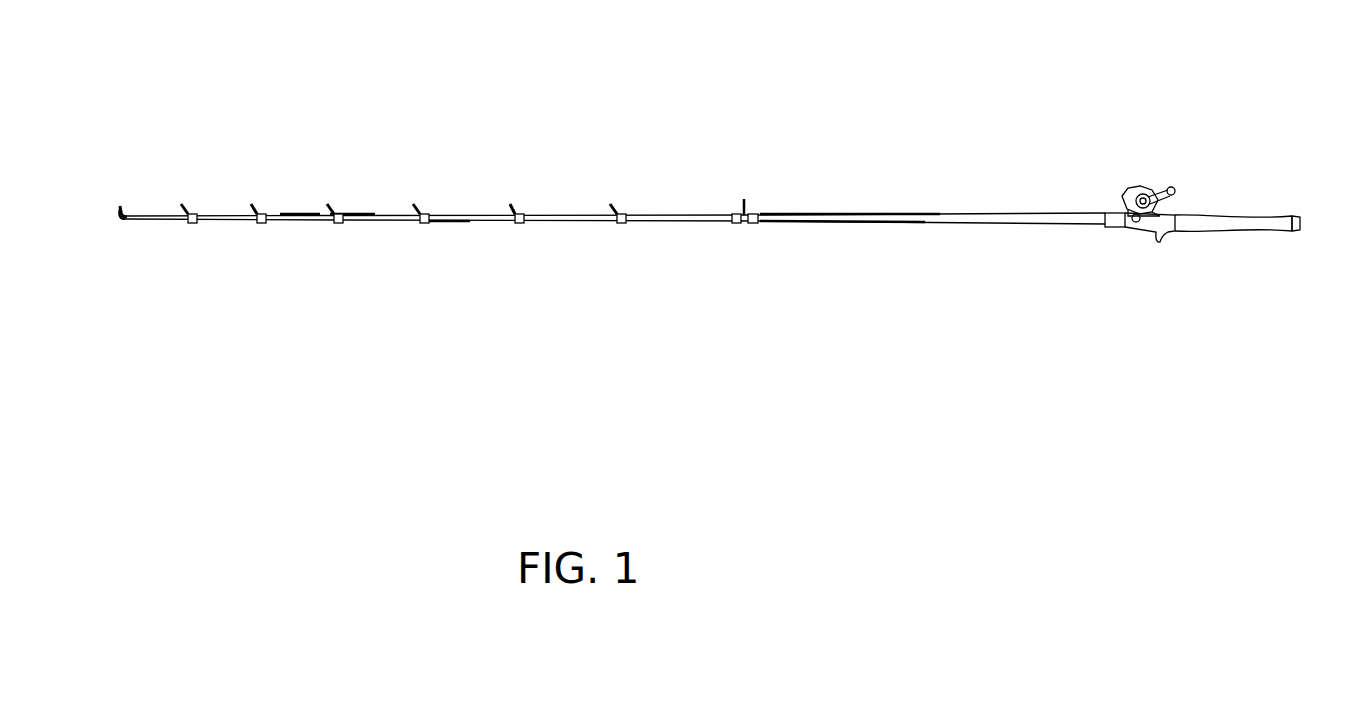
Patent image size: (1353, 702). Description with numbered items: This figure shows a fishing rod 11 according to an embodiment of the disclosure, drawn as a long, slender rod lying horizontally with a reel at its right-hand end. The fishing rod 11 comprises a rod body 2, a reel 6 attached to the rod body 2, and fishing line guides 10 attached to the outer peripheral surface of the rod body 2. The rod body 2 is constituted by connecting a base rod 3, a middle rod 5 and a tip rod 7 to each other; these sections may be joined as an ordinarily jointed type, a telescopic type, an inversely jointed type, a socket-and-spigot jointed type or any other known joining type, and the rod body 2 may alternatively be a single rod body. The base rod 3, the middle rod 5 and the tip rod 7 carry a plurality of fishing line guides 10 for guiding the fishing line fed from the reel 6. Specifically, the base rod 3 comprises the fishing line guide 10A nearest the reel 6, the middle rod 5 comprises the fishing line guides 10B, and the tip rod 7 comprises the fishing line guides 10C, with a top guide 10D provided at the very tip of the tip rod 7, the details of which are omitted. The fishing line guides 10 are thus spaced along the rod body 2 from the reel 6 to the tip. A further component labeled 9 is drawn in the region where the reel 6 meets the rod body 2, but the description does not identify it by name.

The fishing rod 11 is at (1052, 92).
The rod body 2 is at (987, 299).
The tip rod 7 is at (374, 222).
The middle rod 5 is at (563, 222).
The base rod 3 is at (970, 222).
The fishing line guide 10 is at (764, 125).
The fishing line guide 10A is at (744, 200).
The fishing line guide 10B is at (610, 205).
The fishing line guide 10C is at (326, 205).
The top guide 10D is at (121, 206).
The reel seat / grip 9 is at (1138, 236).
The reel 6 is at (1137, 191).